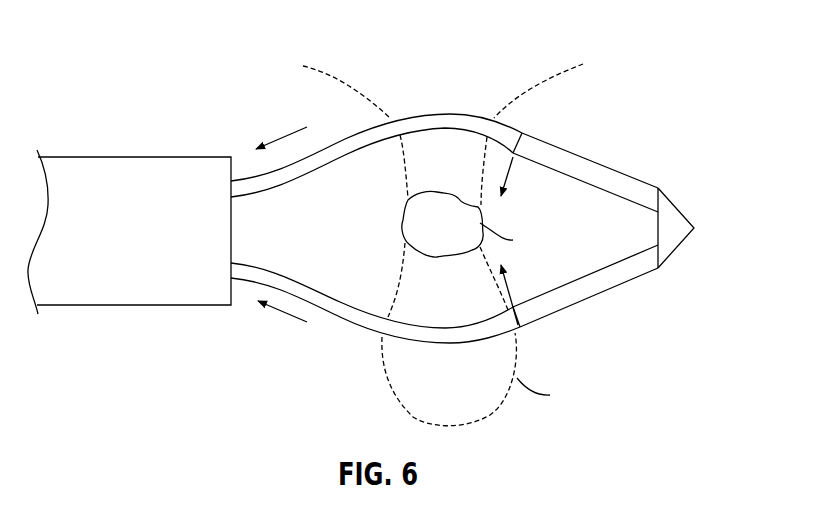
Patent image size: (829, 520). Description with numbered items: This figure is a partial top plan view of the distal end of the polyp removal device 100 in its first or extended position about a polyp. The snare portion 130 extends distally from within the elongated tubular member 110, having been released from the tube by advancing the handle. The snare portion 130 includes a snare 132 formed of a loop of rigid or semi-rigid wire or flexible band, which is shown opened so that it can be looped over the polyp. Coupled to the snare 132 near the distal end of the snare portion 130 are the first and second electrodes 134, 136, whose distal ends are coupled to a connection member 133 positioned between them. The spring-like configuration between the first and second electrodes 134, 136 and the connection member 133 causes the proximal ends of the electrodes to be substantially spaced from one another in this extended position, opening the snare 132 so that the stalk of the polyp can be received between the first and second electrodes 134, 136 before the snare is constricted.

The polyp removal device 100 is at (126, 60).
The elongated tubular member 110 is at (155, 305).
The snare portion 130 is at (473, 91).
The snare 132 is at (440, 113).
The connection member 133 is at (694, 228).
The first electrode 134 is at (588, 155).
The second electrode 136 is at (597, 298).